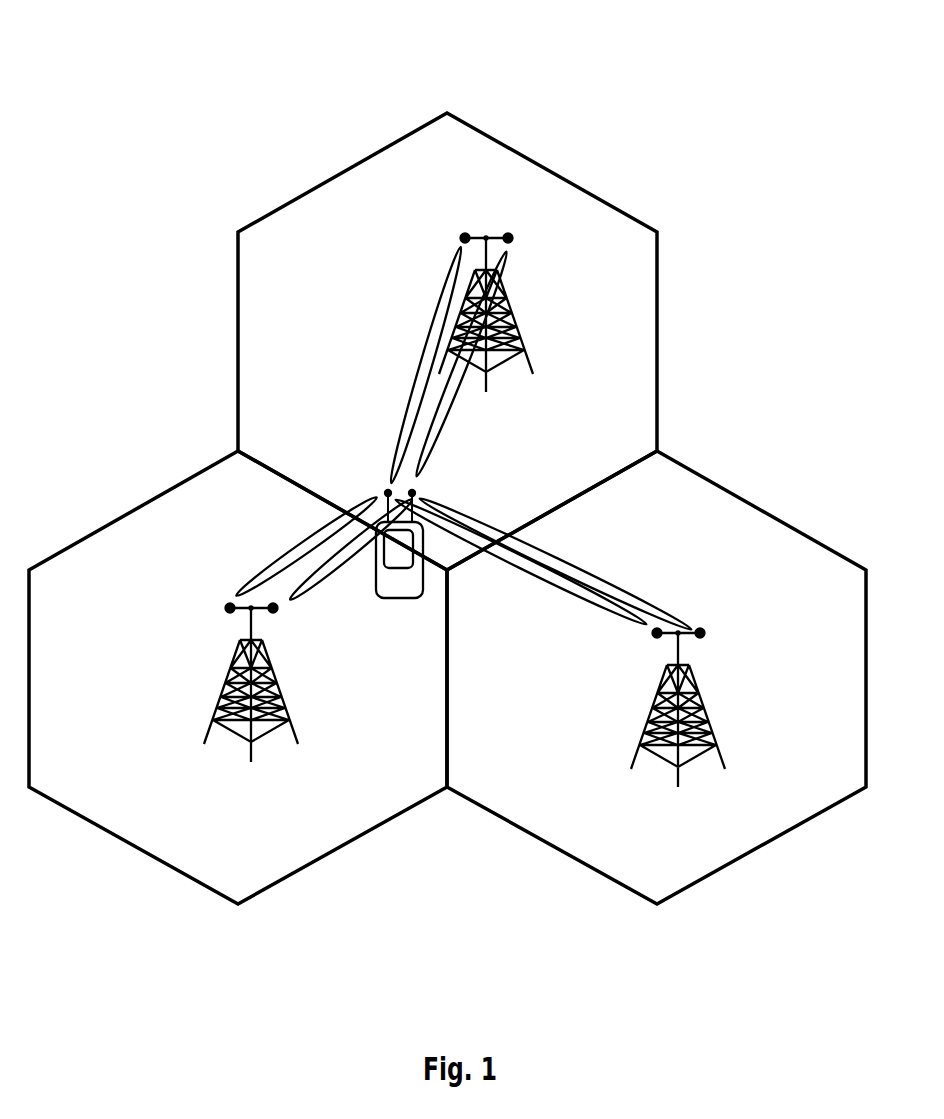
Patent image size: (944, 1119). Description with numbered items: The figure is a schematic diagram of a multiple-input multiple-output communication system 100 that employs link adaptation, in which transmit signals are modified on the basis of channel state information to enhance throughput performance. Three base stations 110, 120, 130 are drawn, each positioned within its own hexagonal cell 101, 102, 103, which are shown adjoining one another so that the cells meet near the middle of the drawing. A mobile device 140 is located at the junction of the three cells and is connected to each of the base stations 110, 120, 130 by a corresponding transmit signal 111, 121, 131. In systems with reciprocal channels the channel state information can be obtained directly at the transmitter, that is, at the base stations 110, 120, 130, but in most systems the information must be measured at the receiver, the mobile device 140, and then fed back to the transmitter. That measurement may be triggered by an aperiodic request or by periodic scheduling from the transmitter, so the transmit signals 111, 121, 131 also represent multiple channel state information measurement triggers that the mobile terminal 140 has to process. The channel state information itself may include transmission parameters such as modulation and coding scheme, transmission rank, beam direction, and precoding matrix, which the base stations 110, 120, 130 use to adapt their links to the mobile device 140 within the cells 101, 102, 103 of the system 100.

The communication system 100 is at (194, 97).
The first cell 101 is at (604, 186).
The second cell 102 is at (782, 496).
The third cell 103 is at (130, 494).
The base station 110 is at (528, 299).
The transmit signal 111 is at (399, 393).
The base station 120 is at (728, 708).
The transmit signal 121 is at (602, 559).
The base station 130 is at (204, 679).
The transmit signal 131 is at (302, 524).
The mobile device 140 is at (393, 606).